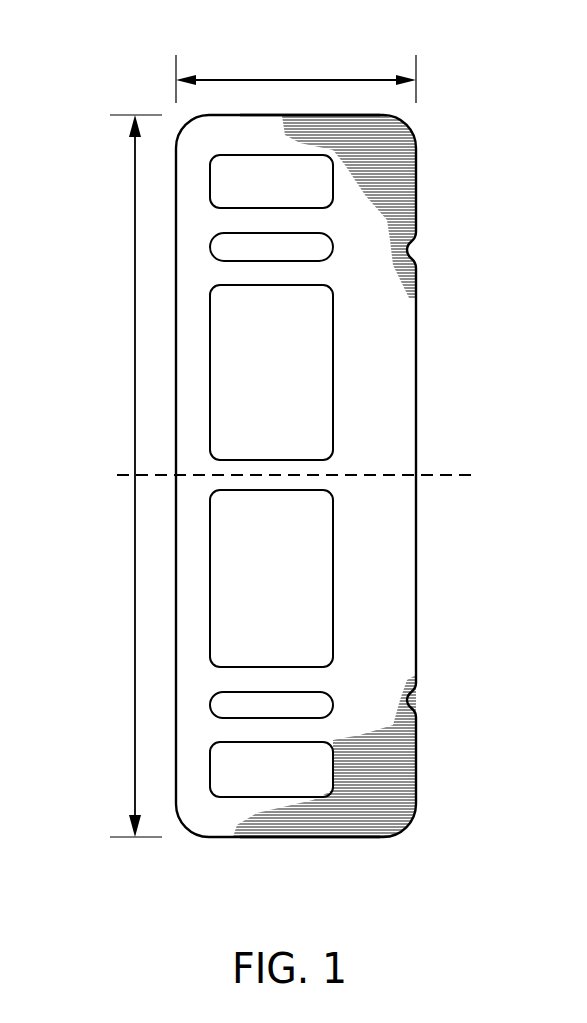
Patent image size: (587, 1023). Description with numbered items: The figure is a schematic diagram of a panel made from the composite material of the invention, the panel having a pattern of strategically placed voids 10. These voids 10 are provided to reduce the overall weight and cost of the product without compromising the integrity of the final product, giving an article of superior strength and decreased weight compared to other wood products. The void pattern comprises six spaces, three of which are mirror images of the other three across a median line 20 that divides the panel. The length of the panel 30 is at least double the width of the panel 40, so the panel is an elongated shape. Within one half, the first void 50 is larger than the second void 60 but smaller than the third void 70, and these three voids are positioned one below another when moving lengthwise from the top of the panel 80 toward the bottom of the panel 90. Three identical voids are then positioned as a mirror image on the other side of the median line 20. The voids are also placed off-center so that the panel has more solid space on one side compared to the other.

The voids 10 is at (432, 633).
The median line 20 is at (468, 475).
The length of the panel 30 is at (135, 380).
The width of the panel 40 is at (287, 80).
The first void 50 is at (333, 180).
The second void 60 is at (333, 243).
The third void 70 is at (333, 360).
The top of the panel 80 is at (327, 115).
The bottom of the panel 90 is at (300, 837).